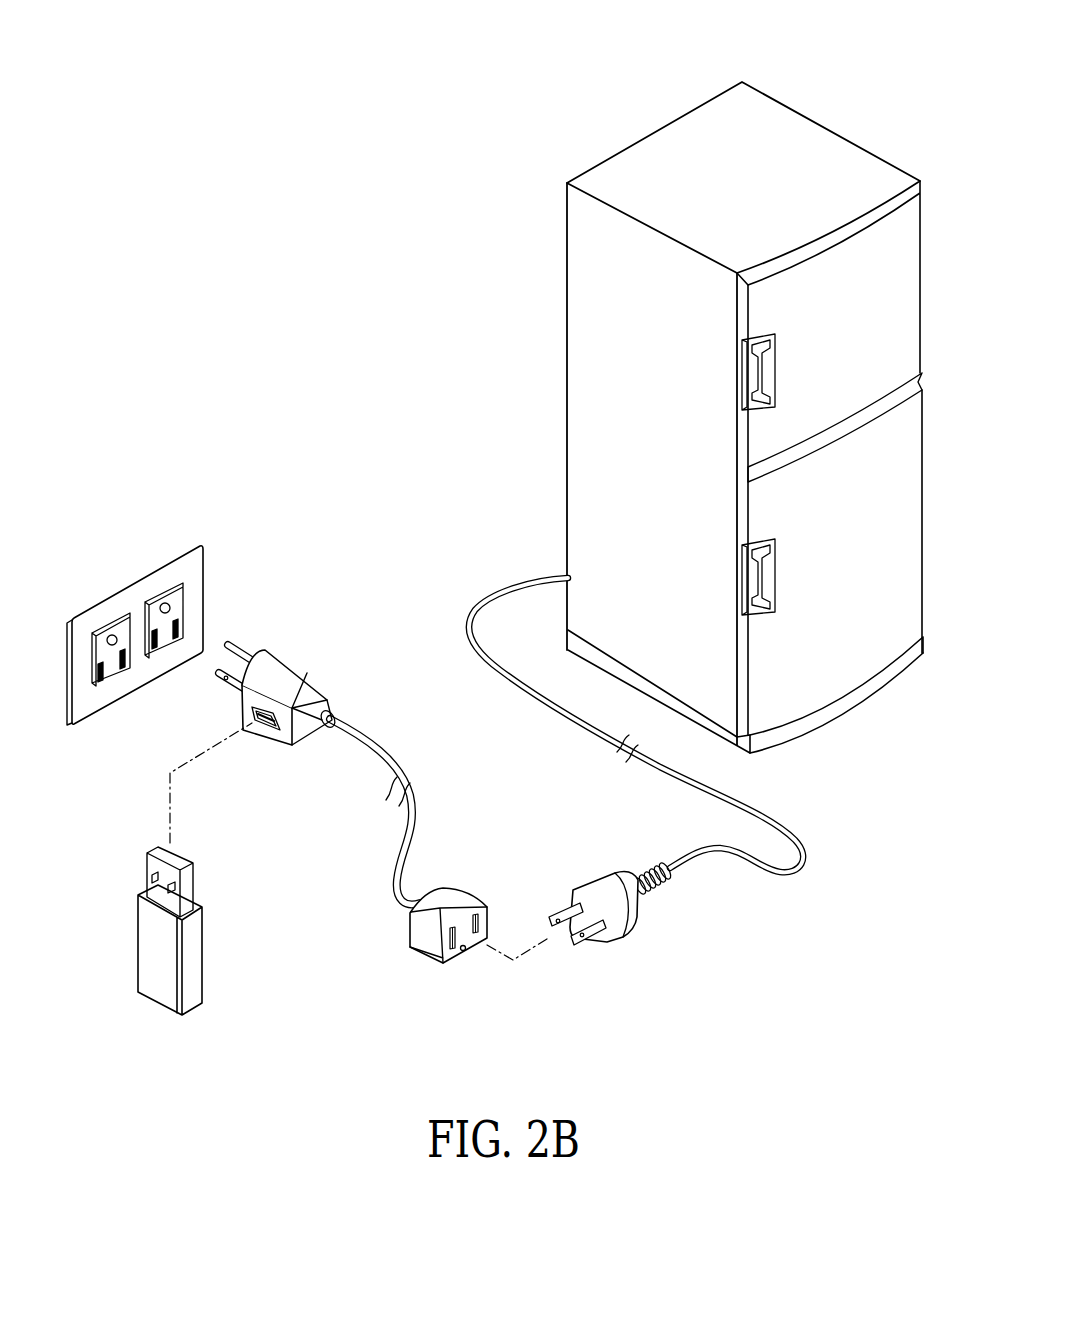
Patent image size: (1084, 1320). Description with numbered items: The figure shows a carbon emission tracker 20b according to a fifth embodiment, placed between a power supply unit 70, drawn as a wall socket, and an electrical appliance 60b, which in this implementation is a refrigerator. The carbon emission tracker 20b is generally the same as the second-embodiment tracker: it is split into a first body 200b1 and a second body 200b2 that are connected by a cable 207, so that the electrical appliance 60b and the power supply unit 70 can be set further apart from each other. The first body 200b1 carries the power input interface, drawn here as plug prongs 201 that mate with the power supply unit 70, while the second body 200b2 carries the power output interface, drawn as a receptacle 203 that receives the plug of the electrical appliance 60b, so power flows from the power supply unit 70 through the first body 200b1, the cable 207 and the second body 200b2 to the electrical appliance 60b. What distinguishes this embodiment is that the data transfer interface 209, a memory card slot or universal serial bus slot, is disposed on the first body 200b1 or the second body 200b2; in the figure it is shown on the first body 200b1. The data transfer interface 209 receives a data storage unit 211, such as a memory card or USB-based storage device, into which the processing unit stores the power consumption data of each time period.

The electrical appliance 60b is at (555, 328).
The power supply unit 70 is at (122, 568).
The carbon emission tracker 20b is at (331, 809).
The first body 200b1 is at (242, 700).
The second body 200b2 is at (462, 927).
The plug prongs 201 is at (226, 684).
The receptacle socket 203 is at (452, 963).
The cable 207 is at (360, 743).
The data transfer interface 209 is at (270, 733).
The data storage unit 211 is at (193, 960).